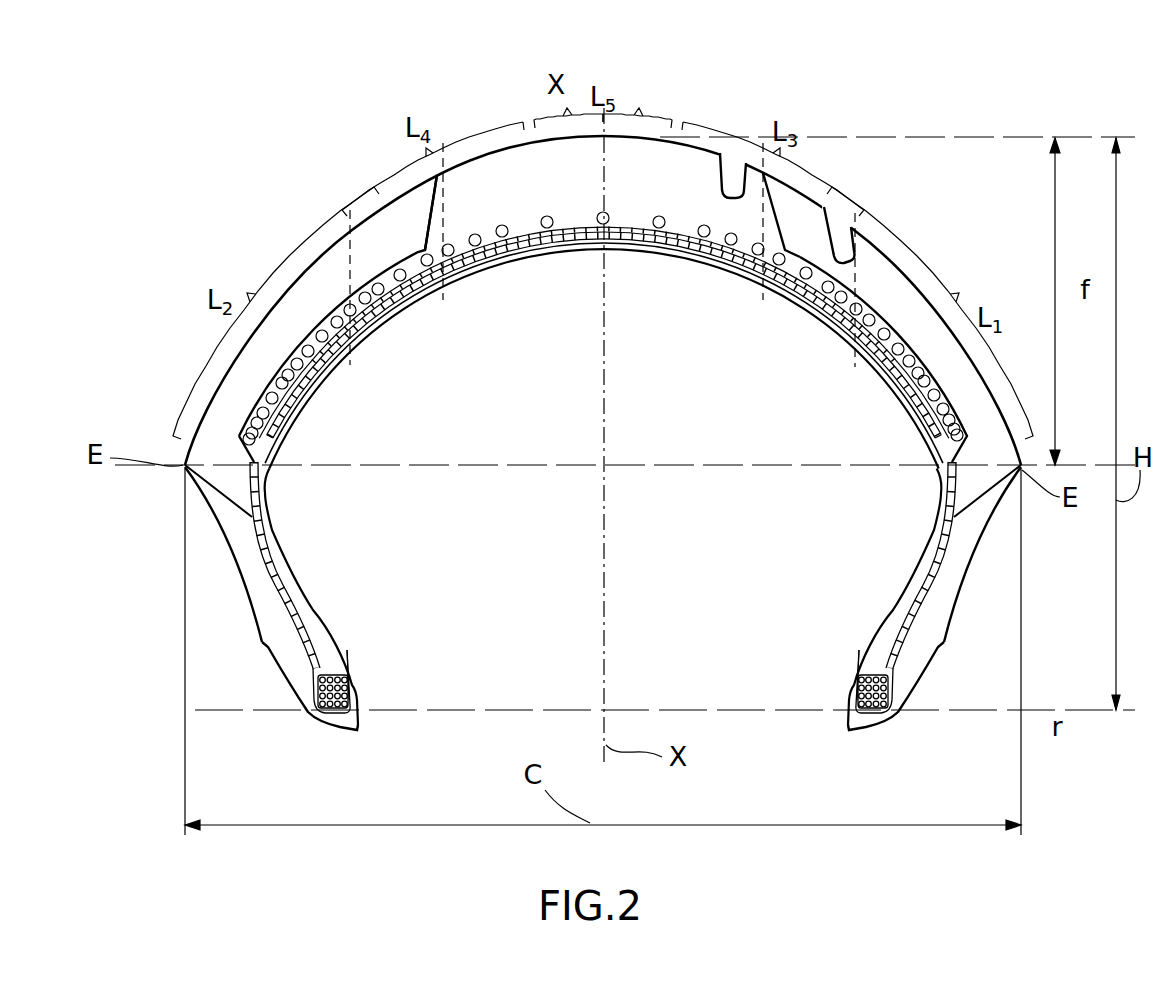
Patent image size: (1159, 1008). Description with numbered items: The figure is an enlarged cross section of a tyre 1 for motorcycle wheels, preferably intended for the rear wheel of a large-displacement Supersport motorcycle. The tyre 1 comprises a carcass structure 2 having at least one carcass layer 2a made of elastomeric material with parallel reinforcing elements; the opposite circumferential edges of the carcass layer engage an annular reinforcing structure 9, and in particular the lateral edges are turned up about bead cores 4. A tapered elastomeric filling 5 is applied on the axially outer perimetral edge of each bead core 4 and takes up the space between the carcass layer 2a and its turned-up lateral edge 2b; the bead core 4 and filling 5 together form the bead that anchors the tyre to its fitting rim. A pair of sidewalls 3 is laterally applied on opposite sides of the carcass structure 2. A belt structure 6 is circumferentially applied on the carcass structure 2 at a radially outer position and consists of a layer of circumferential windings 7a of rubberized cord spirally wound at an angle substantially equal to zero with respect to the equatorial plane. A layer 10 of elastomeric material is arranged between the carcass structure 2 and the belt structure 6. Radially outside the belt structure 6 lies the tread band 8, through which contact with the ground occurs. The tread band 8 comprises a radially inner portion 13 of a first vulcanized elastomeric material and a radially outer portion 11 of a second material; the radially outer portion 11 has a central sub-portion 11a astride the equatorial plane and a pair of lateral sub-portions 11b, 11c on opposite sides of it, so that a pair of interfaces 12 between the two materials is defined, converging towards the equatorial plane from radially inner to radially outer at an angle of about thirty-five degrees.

The tyre 1 is at (335, 115).
The carcass structure 2 is at (903, 593).
The carcass layer 2a is at (860, 657).
The turned-up lateral edge 2b is at (930, 600).
The sidewall 3 is at (962, 552).
The bead core 4 is at (850, 680).
The tapered elastomeric filling 5 is at (932, 655).
The belt structure 6 is at (733, 232).
The circumferential windings 7a is at (893, 328).
The tread band 8 is at (644, 125).
The annular reinforcing structure 9 is at (878, 667).
The layer of elastomeric material 10 is at (953, 518).
The radially outer portion 11 is at (333, 240).
The central sub-portion 11a is at (638, 182).
The lateral sub-portion 11b is at (300, 310).
The lateral sub-portion 11c is at (963, 385).
The interface 12 is at (776, 223).
The radially inner portion 13 is at (870, 310).